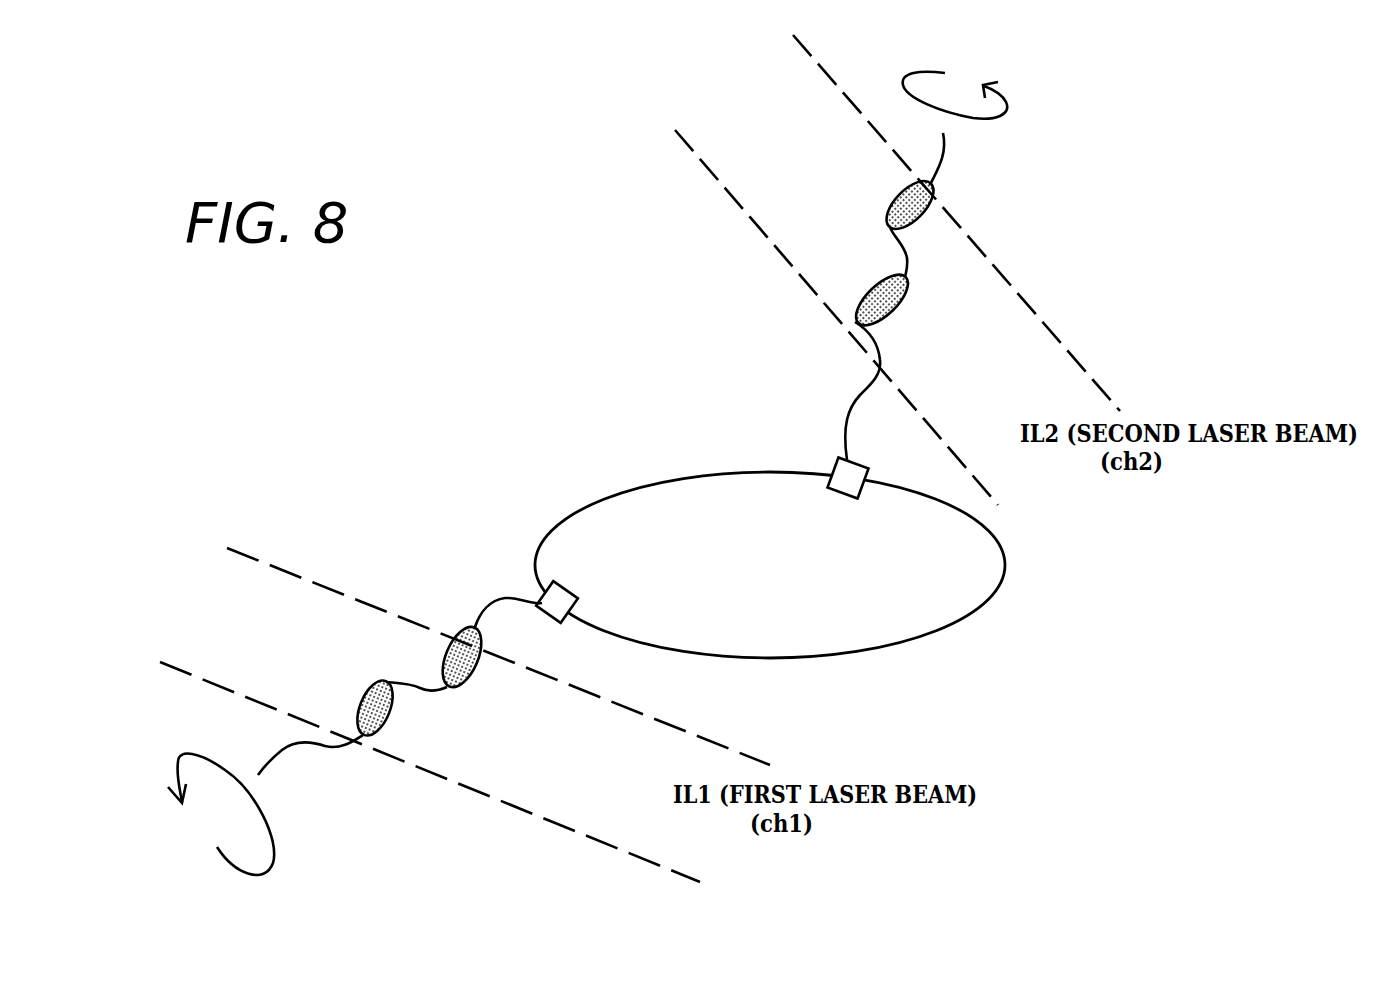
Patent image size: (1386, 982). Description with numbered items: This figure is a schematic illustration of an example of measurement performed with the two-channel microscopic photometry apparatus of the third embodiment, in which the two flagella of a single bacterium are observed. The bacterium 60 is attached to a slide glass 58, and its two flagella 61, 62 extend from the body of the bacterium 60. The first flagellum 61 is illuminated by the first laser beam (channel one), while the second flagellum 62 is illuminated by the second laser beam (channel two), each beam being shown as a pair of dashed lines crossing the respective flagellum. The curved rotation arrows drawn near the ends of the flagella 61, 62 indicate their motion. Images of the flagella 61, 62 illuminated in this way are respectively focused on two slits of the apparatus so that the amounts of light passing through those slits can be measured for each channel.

The slide glass 58 is at (770, 562).
The bacterium 60 is at (947, 628).
The flagellum 61 is at (293, 747).
The flagellum 62 is at (932, 188).